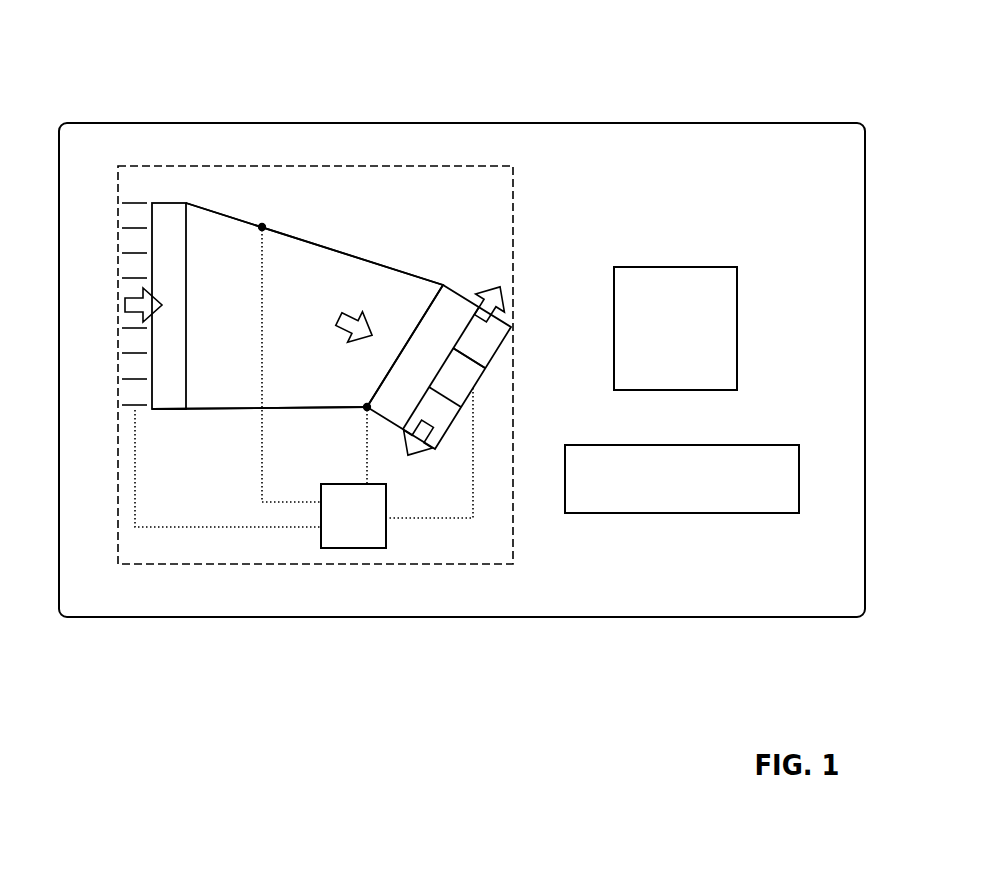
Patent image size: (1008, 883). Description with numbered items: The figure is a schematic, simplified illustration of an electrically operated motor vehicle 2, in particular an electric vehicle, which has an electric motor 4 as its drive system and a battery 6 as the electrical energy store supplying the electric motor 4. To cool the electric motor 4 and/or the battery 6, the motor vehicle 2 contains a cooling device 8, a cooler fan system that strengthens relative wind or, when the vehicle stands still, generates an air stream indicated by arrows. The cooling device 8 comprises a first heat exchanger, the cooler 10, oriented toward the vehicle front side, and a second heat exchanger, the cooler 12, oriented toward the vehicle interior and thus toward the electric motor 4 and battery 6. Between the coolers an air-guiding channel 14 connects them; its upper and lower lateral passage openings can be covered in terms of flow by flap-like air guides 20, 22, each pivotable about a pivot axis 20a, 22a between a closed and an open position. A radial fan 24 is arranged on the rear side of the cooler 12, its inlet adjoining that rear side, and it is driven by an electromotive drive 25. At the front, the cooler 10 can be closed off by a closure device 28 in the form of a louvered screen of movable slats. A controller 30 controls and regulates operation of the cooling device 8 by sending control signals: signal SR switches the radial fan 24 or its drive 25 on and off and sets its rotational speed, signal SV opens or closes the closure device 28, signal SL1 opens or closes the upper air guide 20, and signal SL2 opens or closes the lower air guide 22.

The motor vehicle 2 is at (660, 123).
The electric motor 4 is at (668, 338).
The battery 6 is at (668, 490).
The cooling device 8 is at (363, 166).
The cooler 10 is at (168, 203).
The cooler 12 is at (467, 296).
The air-guiding channel 14 is at (223, 214).
The air guide 20 is at (380, 263).
The pivot axis 20a is at (262, 227).
The air guide 22 is at (228, 409).
The pivot axis 22a is at (369, 410).
The radial fan 24 is at (448, 428).
The electromotive drive 25 is at (478, 378).
The closure device 28 is at (136, 192).
The controller 30 is at (340, 528).
The control signal SV is at (150, 527).
The control signal SL1 is at (285, 502).
The control signal SL2 is at (363, 458).
The control signal SR is at (437, 518).